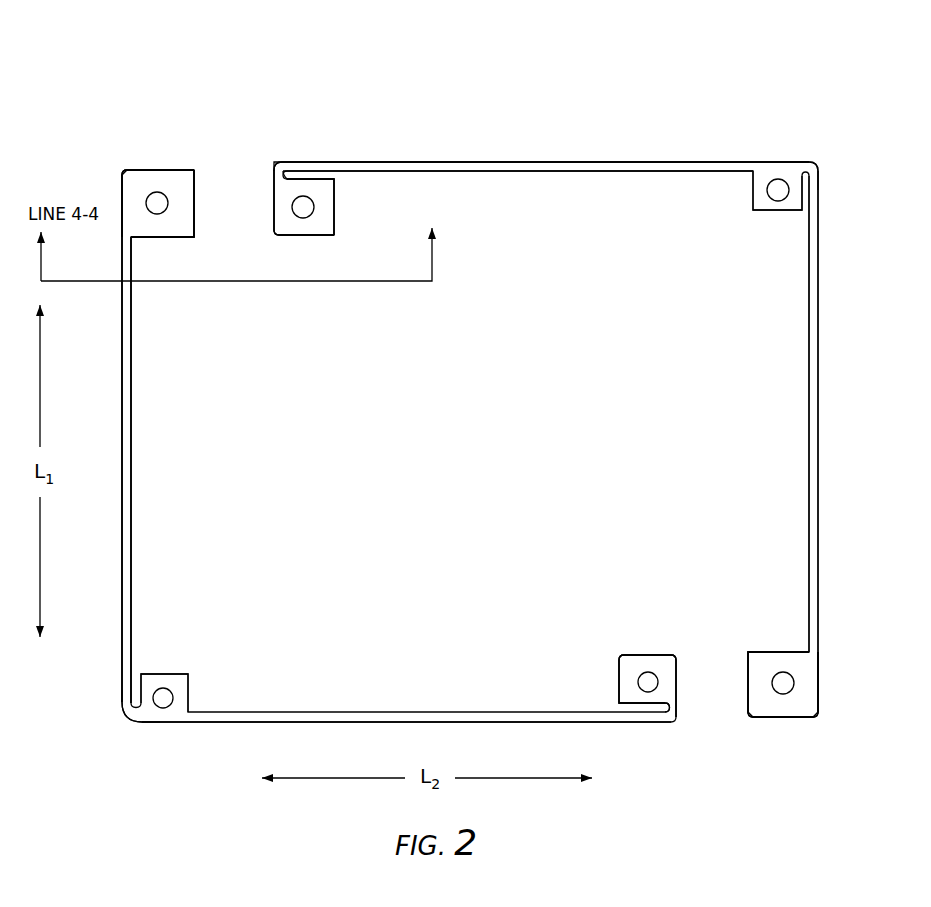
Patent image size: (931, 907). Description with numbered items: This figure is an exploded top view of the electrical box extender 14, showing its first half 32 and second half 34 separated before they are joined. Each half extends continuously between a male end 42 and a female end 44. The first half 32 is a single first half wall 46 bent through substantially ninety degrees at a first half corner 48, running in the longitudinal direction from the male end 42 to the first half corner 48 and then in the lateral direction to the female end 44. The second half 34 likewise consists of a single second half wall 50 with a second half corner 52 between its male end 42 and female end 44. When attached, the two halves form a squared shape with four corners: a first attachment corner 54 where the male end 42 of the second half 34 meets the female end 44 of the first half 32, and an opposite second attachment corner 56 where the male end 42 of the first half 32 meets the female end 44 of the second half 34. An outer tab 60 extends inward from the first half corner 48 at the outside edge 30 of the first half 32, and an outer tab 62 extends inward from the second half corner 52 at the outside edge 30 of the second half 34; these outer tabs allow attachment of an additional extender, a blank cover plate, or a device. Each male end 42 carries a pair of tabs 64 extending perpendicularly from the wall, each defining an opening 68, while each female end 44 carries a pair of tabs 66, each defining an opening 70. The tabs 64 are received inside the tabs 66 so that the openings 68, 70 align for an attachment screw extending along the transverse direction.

The electrical box extender 14 is at (100, 95).
The outside edge 30 is at (575, 161).
The first half 32 is at (102, 438).
The second half 34 is at (726, 138).
The male end 42 is at (313, 240).
The female end 44 is at (170, 248).
The first half wall 46 is at (126, 525).
The first half corner 48 is at (128, 727).
The second half wall 50 is at (820, 360).
The second half corner 52 is at (820, 168).
The first attachment corner 54 is at (194, 145).
The second attachment corner 56 is at (755, 733).
The outer tab 60 is at (173, 672).
The outer tab 62 is at (757, 203).
The tabs 64 is at (328, 186).
The tabs 66 is at (186, 219).
The opening 68 is at (305, 196).
The opening 70 is at (157, 192).